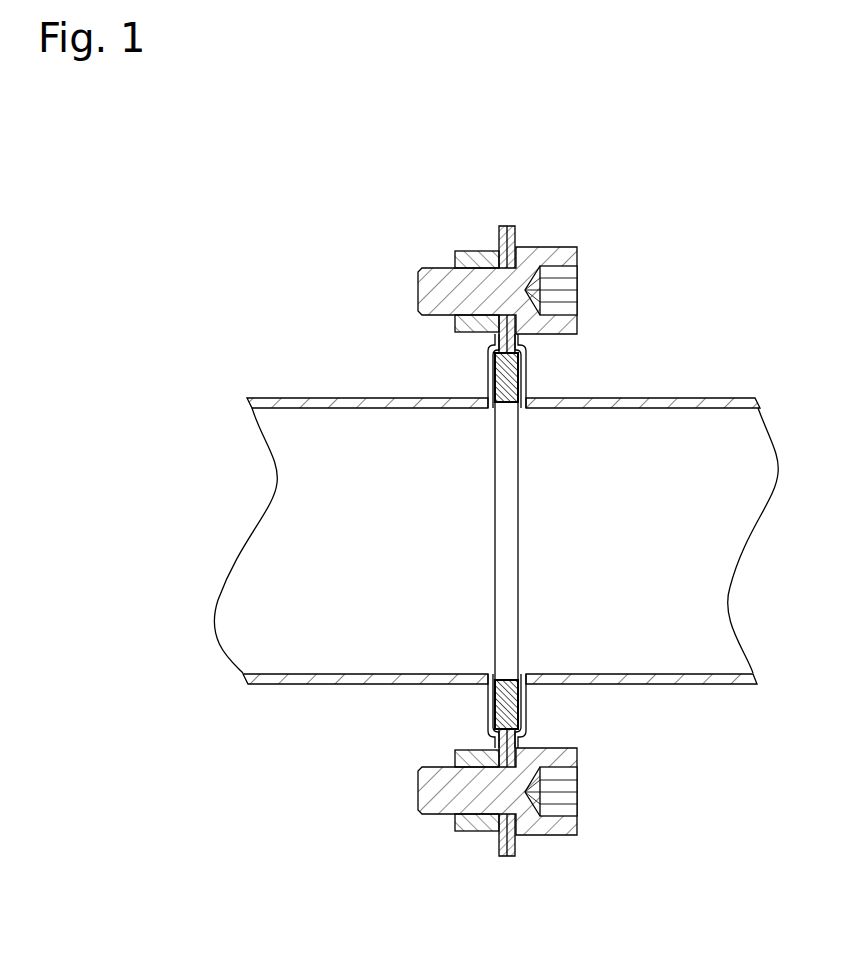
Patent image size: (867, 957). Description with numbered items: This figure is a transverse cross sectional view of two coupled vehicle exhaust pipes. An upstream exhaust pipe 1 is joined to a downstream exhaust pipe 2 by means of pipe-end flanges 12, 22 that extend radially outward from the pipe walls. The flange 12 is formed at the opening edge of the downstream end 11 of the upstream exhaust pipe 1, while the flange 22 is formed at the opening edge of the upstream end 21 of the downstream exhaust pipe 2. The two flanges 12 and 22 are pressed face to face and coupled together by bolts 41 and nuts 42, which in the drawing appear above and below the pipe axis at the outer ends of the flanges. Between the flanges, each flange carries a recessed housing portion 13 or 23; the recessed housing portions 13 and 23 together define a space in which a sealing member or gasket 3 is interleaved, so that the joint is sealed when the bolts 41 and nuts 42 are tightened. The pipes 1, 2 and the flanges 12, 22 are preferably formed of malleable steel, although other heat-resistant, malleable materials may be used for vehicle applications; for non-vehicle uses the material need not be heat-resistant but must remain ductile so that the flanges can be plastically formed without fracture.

The upstream exhaust pipe 1 is at (351, 483).
The downstream exhaust pipe 2 is at (661, 484).
The sealing member or gasket 3 is at (505, 405).
The downstream end 11 is at (420, 674).
The pipe-end flange 12 is at (500, 247).
The recessed housing portion 13 is at (487, 360).
The upstream end 21 is at (590, 674).
The pipe-end flange 22 is at (515, 233).
The recessed housing portion 23 is at (527, 377).
The bolt 41 is at (570, 255).
The nut 42 is at (458, 258).